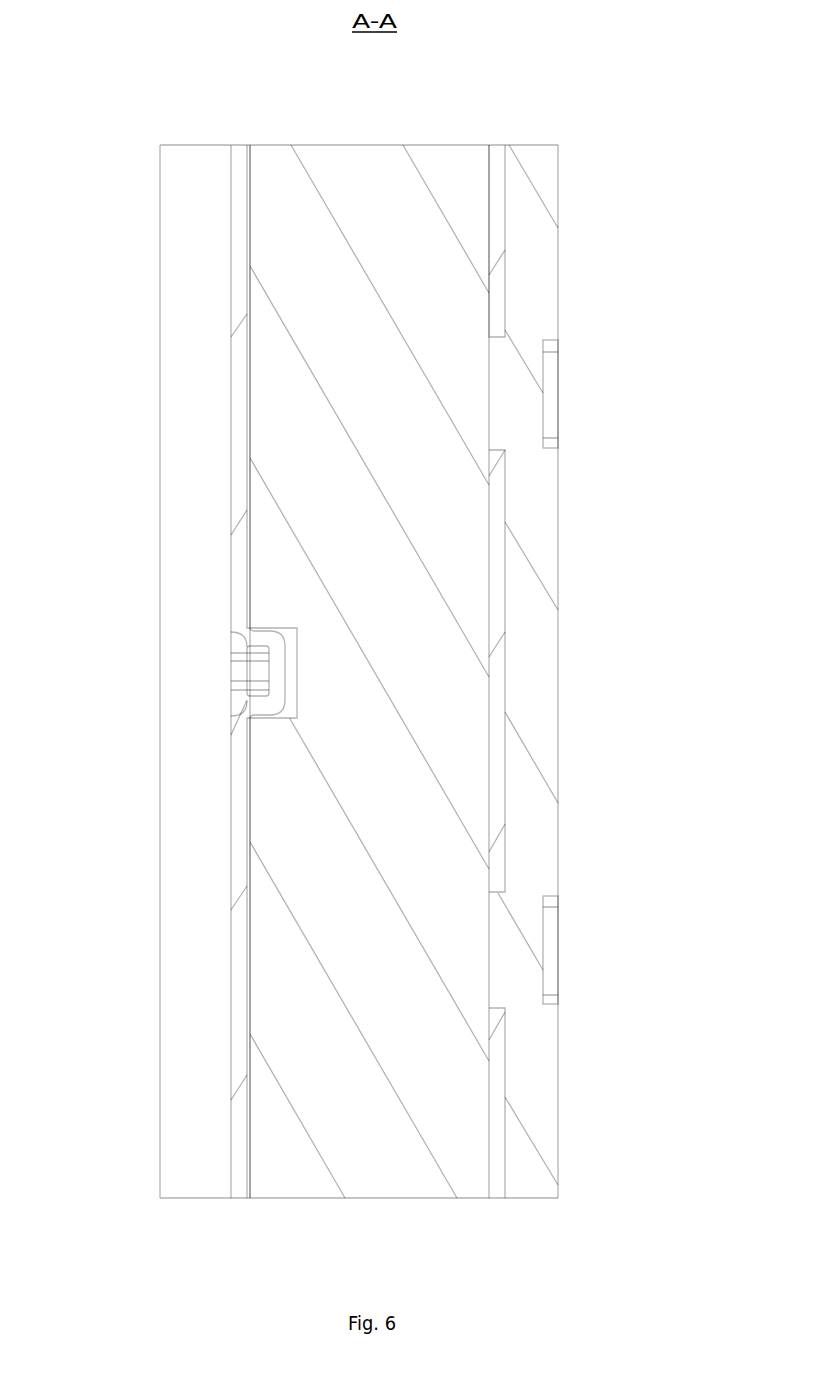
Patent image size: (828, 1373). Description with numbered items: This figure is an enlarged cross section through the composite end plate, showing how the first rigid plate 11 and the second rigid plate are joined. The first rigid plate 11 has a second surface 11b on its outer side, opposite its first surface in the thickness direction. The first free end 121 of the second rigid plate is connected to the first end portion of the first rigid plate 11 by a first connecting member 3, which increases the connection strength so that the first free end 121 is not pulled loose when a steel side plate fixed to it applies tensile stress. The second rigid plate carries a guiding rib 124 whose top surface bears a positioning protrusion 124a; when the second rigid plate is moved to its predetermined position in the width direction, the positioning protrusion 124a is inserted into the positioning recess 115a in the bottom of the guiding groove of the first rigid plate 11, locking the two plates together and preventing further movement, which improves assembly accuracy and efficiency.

The first connecting member 3 is at (497, 378).
The first rigid plate 11 is at (537, 840).
The second surface 11b is at (571, 268).
The positioning recess 115a is at (290, 671).
The first free end 121 is at (495, 588).
The guiding rib 124 is at (193, 365).
The positioning protrusion 124a is at (272, 671).